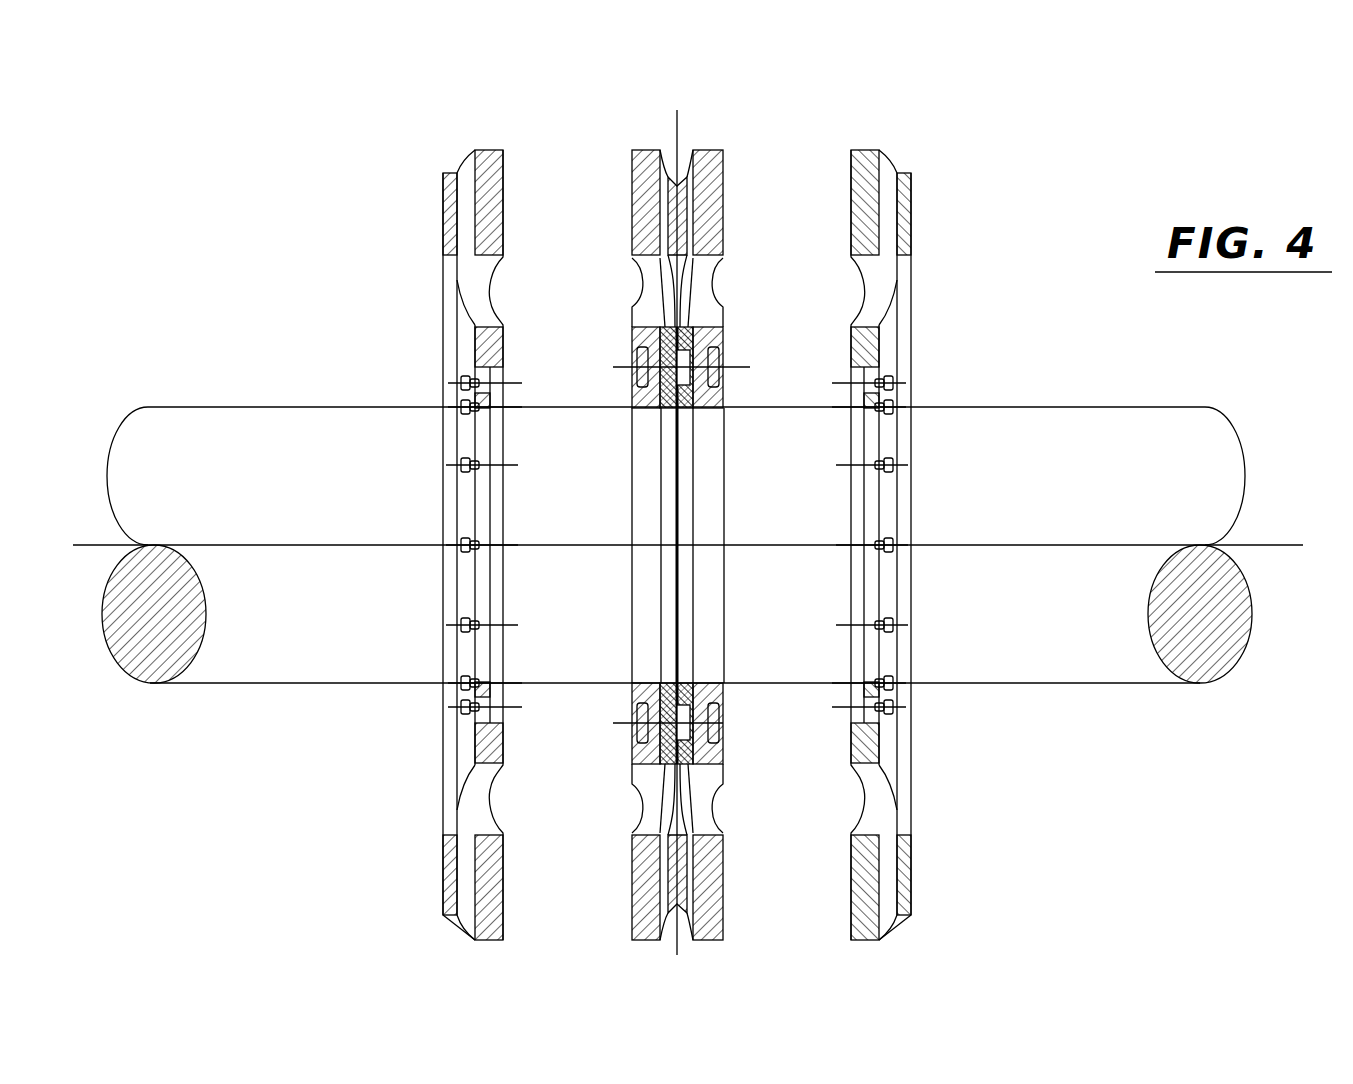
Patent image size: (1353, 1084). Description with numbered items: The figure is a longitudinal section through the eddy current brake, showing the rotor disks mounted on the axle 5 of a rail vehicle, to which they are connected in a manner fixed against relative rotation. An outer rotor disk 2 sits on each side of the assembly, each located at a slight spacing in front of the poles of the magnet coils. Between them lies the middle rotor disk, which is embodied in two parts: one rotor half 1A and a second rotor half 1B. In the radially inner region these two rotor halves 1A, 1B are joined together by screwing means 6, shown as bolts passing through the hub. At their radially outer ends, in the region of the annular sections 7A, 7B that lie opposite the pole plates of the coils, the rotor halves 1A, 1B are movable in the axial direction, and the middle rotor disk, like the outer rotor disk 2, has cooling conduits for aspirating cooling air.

The outer rotor disk 2 is at (475, 150).
The rotor half 1A is at (647, 150).
The second rotor half 1B is at (712, 150).
The annular section 7A is at (632, 230).
The annular section 7B is at (725, 230).
The screwing means 6 is at (750, 367).
The axle 5 is at (1028, 465).